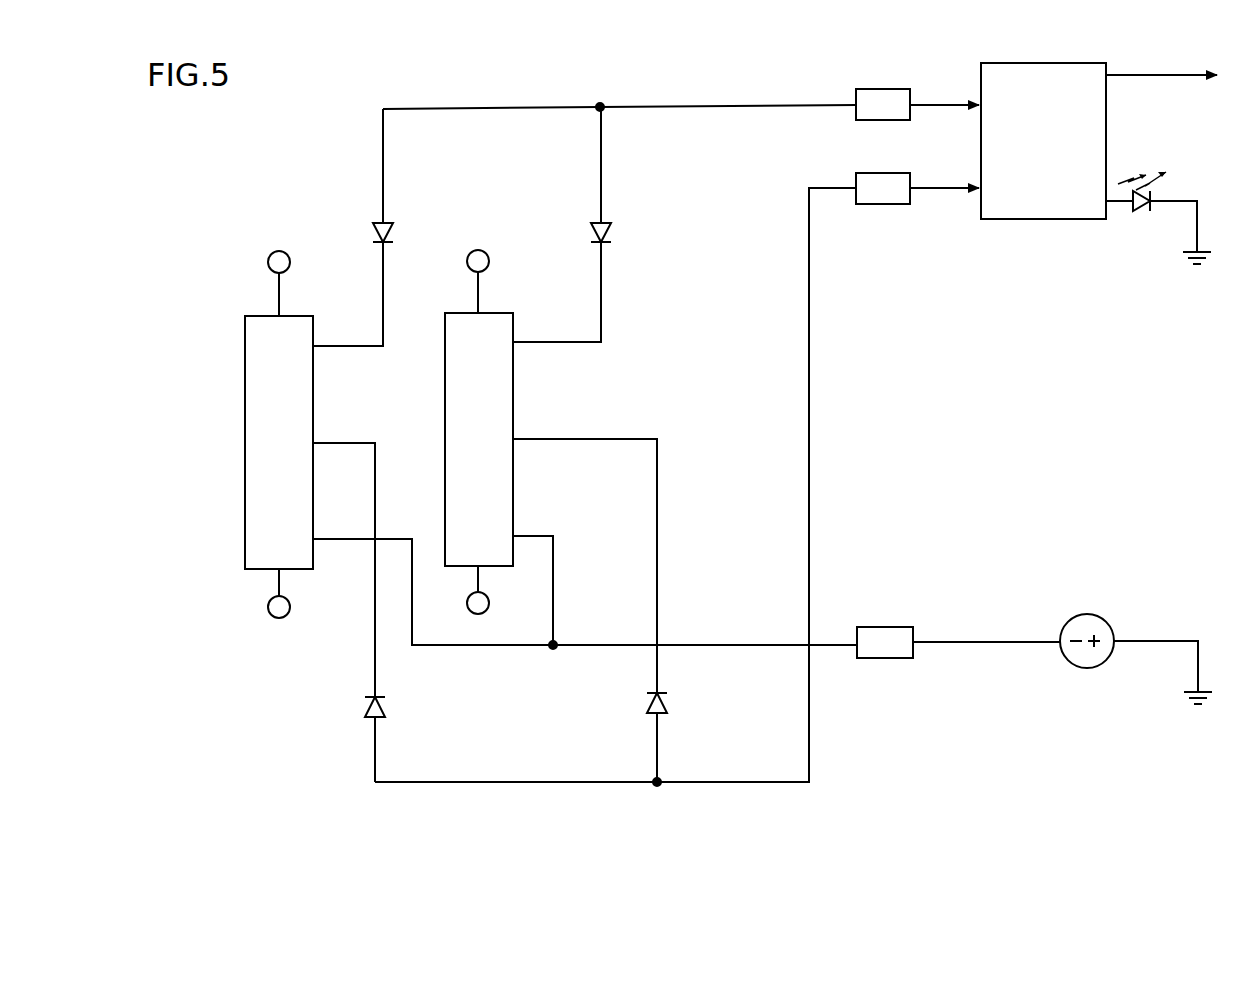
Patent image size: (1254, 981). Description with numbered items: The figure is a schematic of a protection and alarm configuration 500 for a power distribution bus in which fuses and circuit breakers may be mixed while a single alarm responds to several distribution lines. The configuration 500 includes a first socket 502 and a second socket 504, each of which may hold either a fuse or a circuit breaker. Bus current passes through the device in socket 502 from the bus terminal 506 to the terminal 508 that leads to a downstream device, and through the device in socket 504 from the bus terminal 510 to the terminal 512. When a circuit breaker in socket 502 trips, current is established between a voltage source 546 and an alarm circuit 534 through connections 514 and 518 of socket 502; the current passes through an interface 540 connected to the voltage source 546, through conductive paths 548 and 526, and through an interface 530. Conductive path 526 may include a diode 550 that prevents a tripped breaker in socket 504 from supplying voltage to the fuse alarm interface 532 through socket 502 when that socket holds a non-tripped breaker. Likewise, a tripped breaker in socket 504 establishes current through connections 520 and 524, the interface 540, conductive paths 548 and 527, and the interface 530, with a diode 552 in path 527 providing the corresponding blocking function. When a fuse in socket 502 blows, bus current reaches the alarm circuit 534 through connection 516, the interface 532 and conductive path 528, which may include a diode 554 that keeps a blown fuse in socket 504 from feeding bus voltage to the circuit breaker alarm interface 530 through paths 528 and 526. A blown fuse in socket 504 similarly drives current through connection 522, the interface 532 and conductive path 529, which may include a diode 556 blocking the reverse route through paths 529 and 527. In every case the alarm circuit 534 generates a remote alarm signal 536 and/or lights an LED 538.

The protection and alarm configuration 500 is at (986, 731).
The socket 502 is at (245, 503).
The socket 504 is at (444, 371).
The bus terminal 506 is at (286, 252).
The terminal 508 is at (290, 610).
The bus terminal 510 is at (489, 256).
The terminal 512 is at (489, 606).
The connection 514 is at (327, 342).
The connection 516 is at (334, 439).
The connection 518 is at (332, 535).
The connection 520 is at (527, 340).
The connection 522 is at (538, 437).
The connection 524 is at (535, 533).
The conductive path 526 is at (465, 108).
The conductive path 527 is at (602, 162).
The conductive path 528 is at (482, 780).
The conductive path 529 is at (660, 745).
The interface 530 is at (883, 88).
The interface 532 is at (883, 173).
The alarm circuit 534 is at (1060, 63).
The remote alarm signal 536 is at (1148, 72).
The LED 538 is at (1143, 215).
The interface 540 is at (887, 627).
The voltage source 546 is at (1072, 666).
The conductive path 548 is at (832, 645).
The diode 550 is at (402, 215).
The diode 552 is at (620, 213).
The diode 554 is at (388, 704).
The diode 556 is at (668, 700).